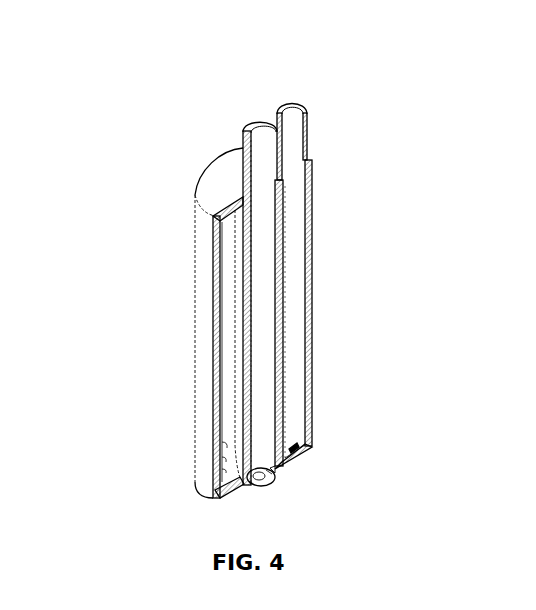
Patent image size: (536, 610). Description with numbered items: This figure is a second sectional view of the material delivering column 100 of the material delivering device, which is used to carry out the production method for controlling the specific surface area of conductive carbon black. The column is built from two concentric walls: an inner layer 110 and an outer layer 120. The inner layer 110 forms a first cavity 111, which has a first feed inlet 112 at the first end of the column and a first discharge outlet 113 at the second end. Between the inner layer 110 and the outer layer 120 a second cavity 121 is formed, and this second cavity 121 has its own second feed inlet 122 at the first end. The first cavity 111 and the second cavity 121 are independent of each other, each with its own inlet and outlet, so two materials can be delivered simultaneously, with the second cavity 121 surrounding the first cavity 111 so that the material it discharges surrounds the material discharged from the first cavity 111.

The material delivering column 100 is at (273, 73).
The inner layer 110 is at (245, 252).
The first cavity 111 is at (263, 321).
The first feed inlet 112 is at (261, 169).
The first discharge outlet 113 is at (262, 481).
The outer layer 120 is at (311, 228).
The second cavity 121 is at (298, 272).
The second feed inlet 122 is at (296, 148).